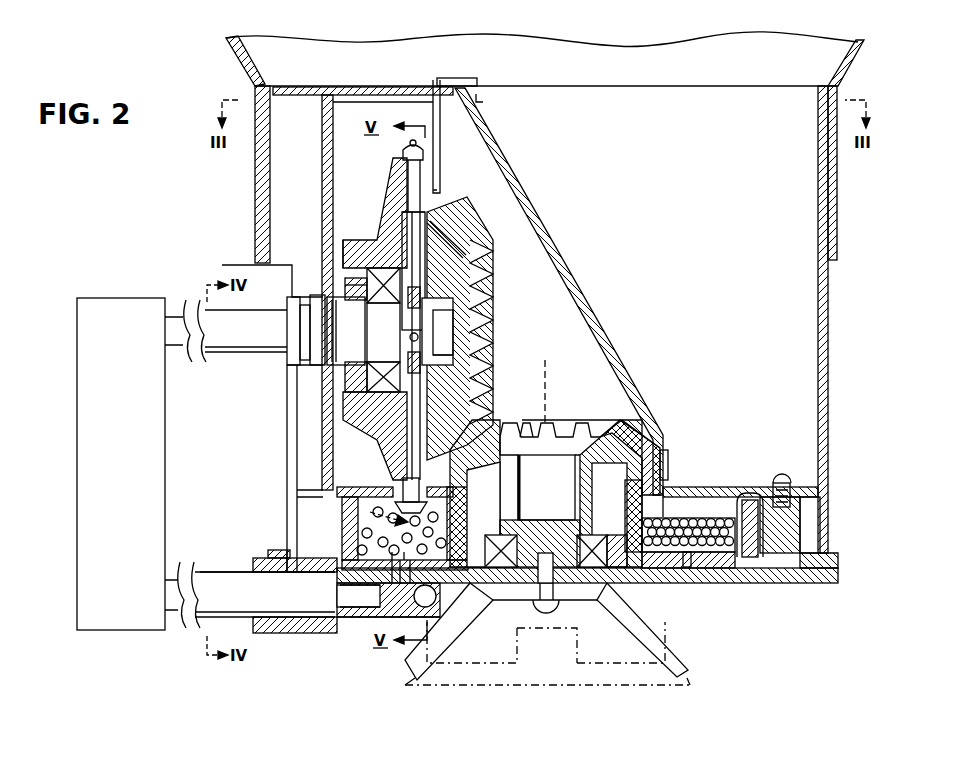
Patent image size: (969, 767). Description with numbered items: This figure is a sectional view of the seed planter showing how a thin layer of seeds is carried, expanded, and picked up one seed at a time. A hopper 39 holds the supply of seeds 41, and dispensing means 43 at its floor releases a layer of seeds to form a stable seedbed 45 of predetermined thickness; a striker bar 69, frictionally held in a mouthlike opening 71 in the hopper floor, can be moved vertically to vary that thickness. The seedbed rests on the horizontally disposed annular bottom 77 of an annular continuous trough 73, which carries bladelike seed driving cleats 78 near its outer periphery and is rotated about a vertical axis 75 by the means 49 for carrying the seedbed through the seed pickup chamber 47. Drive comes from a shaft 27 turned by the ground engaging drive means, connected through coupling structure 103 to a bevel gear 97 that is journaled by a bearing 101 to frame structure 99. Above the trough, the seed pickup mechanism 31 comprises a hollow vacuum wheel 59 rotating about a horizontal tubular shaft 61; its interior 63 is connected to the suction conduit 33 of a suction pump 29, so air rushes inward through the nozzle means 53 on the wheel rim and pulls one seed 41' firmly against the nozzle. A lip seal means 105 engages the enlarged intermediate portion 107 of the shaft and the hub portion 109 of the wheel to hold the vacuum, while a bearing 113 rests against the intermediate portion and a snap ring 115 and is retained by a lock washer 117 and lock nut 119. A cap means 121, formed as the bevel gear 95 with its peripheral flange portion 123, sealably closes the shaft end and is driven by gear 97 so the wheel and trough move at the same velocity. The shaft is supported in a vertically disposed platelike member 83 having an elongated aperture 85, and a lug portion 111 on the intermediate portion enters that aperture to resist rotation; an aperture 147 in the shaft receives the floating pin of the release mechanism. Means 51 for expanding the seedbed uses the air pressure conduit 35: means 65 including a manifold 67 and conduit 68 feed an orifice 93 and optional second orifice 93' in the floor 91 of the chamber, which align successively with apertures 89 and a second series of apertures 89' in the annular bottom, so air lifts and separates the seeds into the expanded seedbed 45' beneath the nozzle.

The shaft 27 is at (559, 663).
The suction pump 29 is at (130, 451).
The seed pickup mechanism 31 is at (542, 353).
The suction conduit 33 is at (190, 316).
The air pressure conduit 35 is at (178, 618).
The hopper 39 is at (699, 185).
The seeds 41 is at (688, 495).
The seed 41' is at (469, 115).
The dispensing means 43 is at (684, 444).
The stable seedbed 45 is at (721, 493).
The expanded seedbed 45' is at (320, 505).
The seed pickup chamber 47 is at (360, 543).
The means for carrying the seedbed 49 is at (575, 425).
The means for expanding the seedbed 51 is at (357, 618).
The nozzle means 53 is at (405, 163).
The vacuum wheel 59 is at (385, 232).
The horizontal shaft 61 is at (280, 345).
The hollow interior 63 is at (412, 236).
The means for communicating the seed pickup chamber with the source of air under pre 65 is at (310, 655).
The manifold 67 is at (370, 618).
The conduit 68 is at (238, 604).
The striker bar 69 is at (664, 455).
The mouthlike opening 71 is at (742, 492).
The annular continuous trough 73 is at (742, 520).
The vertical axis 75 is at (550, 368).
The annular bottom 77 is at (718, 556).
The seed driving cleats 78 is at (360, 545).
The platelike member 83 is at (328, 150).
The elongated aperture 85 is at (320, 262).
The apertures 89 is at (553, 587).
The second series of apertures 89' is at (567, 521).
The floor 91 is at (367, 580).
The orifice 93 is at (501, 631).
The second orifice 93' is at (432, 580).
The bevel gear 95 is at (484, 311).
The bevel gear 97 is at (527, 421).
The frame structure 99 is at (838, 572).
The bearing 101 is at (598, 545).
The coupling structure 103 is at (645, 636).
The lip seal means 105 is at (360, 390).
The intermediate portion 107 is at (363, 334).
The hub portion 109 is at (357, 248).
The lug portion 111 is at (345, 282).
The bearing 113 is at (420, 288).
The snap ring 115 is at (320, 276).
The lock washer 117 is at (433, 297).
The lock nut 119 is at (444, 357).
The cap means 121 is at (486, 210).
The peripheral flange portion 123 is at (430, 154).
The aperture 147 is at (410, 337).